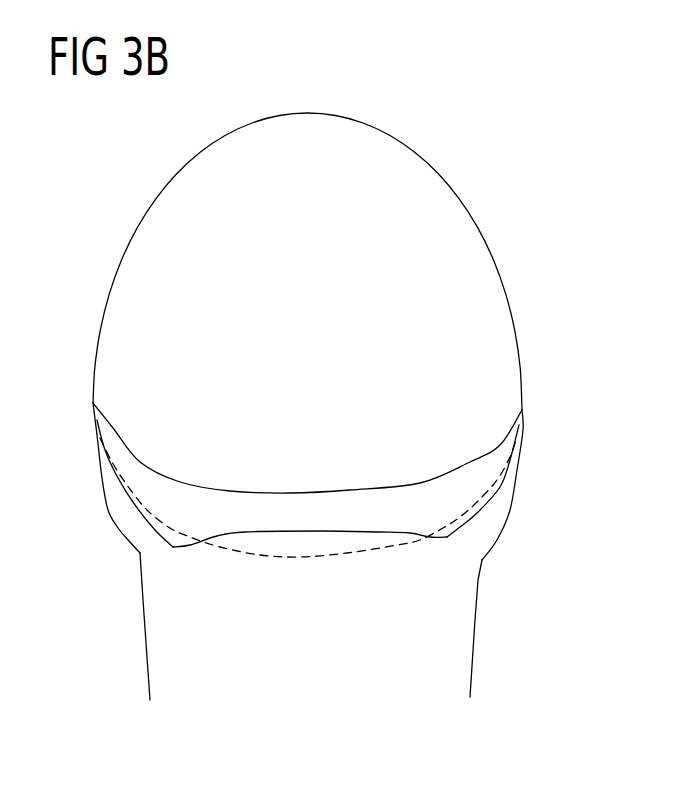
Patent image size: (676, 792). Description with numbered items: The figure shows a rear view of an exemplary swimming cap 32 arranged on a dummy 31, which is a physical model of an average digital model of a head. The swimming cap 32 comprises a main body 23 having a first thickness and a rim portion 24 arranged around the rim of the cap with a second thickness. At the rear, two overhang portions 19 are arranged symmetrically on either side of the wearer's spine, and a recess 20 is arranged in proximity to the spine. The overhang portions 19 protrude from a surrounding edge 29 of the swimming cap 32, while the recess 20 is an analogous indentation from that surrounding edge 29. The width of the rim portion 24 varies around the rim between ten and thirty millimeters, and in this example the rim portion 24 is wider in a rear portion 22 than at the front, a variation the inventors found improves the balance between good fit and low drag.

The overhang portions 19 is at (163, 550).
The recess 20 is at (300, 545).
The rear portion 22 is at (313, 515).
The main body 23 is at (483, 350).
The rim portion 24 is at (462, 492).
The surrounding edge 29 is at (125, 500).
The dummy 31 is at (288, 630).
The swimming cap 32 is at (172, 253).